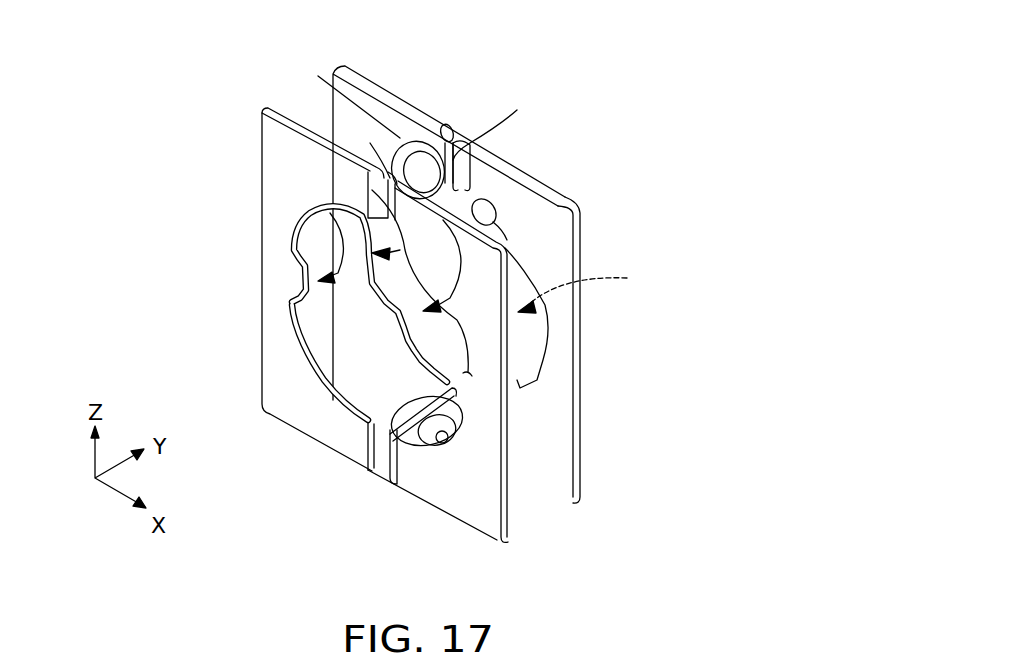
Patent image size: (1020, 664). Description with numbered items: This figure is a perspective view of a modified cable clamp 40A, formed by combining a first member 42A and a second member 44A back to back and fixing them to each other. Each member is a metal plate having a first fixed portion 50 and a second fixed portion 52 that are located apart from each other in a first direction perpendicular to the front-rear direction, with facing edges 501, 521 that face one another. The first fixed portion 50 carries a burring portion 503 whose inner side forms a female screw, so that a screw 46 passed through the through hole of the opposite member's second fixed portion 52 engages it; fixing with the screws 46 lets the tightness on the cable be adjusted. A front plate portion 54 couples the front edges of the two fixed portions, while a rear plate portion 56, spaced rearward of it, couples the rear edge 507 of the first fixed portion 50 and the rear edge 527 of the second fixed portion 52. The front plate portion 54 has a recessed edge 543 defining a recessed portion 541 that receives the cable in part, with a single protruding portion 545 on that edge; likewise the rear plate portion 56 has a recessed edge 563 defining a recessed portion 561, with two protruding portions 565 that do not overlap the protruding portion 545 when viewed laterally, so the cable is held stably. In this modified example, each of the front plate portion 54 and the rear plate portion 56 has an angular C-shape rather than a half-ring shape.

The cable clamp 40A is at (406, 33).
The first member 42A is at (585, 250).
The second member 44A is at (257, 229).
The screw 46 is at (470, 187).
The first fixed portion 50 is at (366, 275).
The facing edge 501 is at (445, 393).
The burring portion 503 is at (447, 126).
The rear edge 507 is at (483, 160).
The second fixed portion 52 is at (402, 140).
The facing edge 521 is at (362, 464).
The rear edge 527 is at (466, 376).
The front plate portion 54 is at (283, 275).
The recessed portion 541 is at (340, 233).
The recessed edge 543 is at (360, 315).
The protruding portion 545 is at (300, 303).
The rear plate portion 56 is at (357, 350).
The recessed portion 561 is at (262, 113).
The recessed edge 563 is at (325, 283).
The protruding portion 565 is at (330, 380).